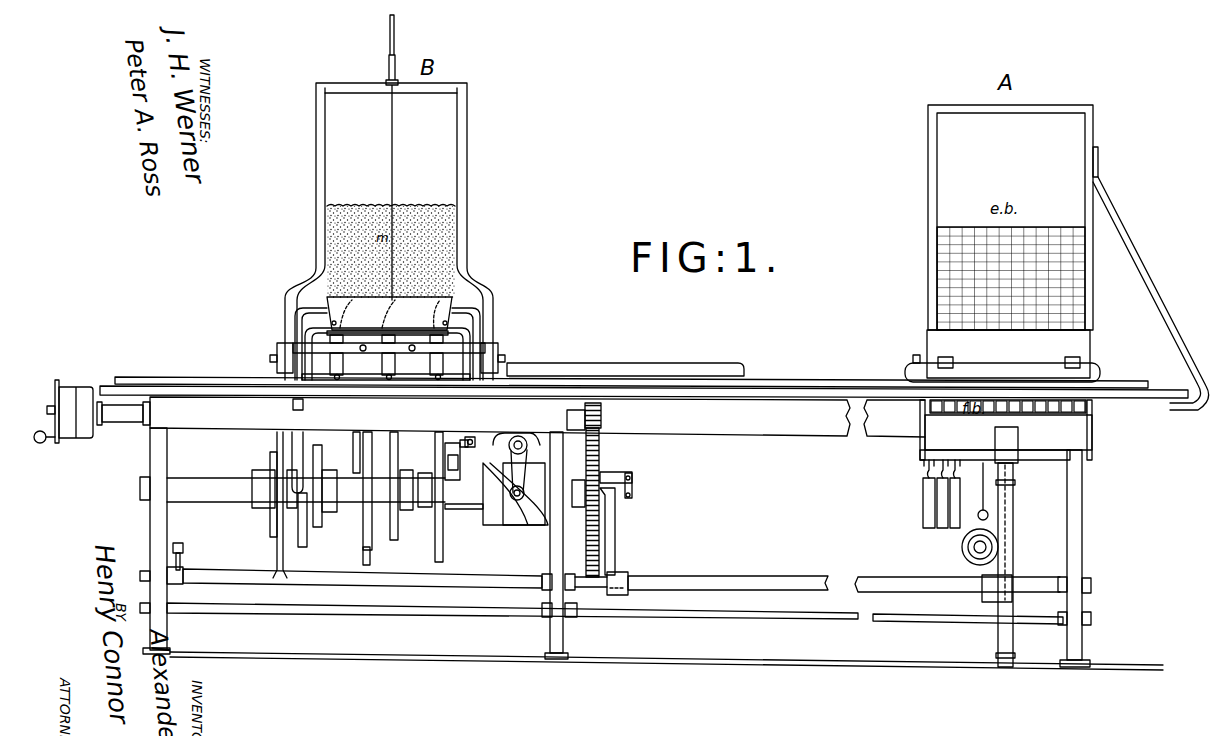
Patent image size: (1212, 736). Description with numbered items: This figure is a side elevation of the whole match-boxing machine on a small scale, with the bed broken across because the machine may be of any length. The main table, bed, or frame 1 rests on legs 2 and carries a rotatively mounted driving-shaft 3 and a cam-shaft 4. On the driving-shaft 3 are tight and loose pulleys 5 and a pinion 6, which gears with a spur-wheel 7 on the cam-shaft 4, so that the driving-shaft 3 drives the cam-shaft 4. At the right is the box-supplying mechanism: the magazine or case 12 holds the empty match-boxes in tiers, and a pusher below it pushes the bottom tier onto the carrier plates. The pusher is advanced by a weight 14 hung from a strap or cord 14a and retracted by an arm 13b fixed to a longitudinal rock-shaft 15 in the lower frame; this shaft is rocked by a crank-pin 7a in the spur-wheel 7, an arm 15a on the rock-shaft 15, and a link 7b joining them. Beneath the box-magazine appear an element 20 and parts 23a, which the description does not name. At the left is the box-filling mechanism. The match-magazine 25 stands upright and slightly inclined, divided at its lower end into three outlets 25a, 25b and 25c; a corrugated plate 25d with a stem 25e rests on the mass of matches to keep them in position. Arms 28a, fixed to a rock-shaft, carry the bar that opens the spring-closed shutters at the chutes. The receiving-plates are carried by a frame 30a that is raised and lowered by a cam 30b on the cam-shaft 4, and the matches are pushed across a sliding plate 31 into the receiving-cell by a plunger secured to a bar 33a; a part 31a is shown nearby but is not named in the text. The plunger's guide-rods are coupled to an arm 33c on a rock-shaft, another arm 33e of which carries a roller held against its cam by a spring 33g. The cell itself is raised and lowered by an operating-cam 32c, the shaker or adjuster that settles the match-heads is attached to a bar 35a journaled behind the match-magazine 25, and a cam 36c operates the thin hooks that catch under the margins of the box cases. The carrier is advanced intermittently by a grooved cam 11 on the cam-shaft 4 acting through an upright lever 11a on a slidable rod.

The main table, bed, or frame 1 is at (644, 400).
The legs 2 is at (563, 640).
The driving-shaft 3 is at (125, 424).
The cam-shaft 4 is at (226, 478).
The tight and loose pulleys 5 is at (80, 383).
The pinion 6 is at (602, 427).
The spur-wheel 7 is at (600, 547).
The crank-pin 7a is at (614, 471).
The link 7b is at (633, 488).
The grooved cam 11 is at (505, 522).
The upright lever 11a is at (527, 470).
The magazine or case 12 is at (1057, 257).
The arm 13b is at (1014, 518).
The weight 14 is at (962, 548).
The strap or cord 14a is at (982, 512).
The rock-shaft 15 is at (790, 578).
The arm 15a is at (616, 528).
The box 20 is at (1006, 430).
The plates 23a is at (935, 516).
The match-magazine 25 is at (467, 233).
The outlet 25a is at (389, 313).
The outlet 25b is at (395, 314).
The outlet 25c is at (435, 314).
The corrugated plate 25d is at (419, 207).
The stem 25e is at (392, 150).
The arms 28a is at (277, 370).
The frame 30a is at (389, 370).
The cam 30b is at (403, 470).
The sliding plate 31 is at (461, 475).
The block 31a is at (476, 444).
The operating-cam 32c is at (366, 550).
The bar 33a is at (455, 584).
The arm 33c is at (282, 552).
The arm 33e is at (272, 522).
The spring 33g is at (184, 553).
The bar 35a is at (448, 511).
The cam 36c is at (323, 512).